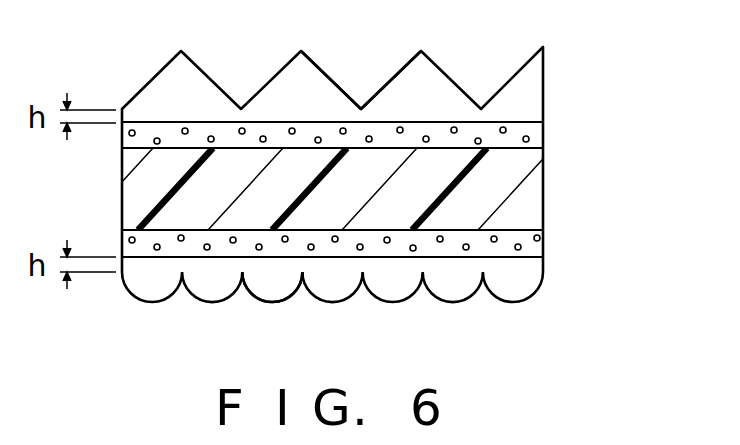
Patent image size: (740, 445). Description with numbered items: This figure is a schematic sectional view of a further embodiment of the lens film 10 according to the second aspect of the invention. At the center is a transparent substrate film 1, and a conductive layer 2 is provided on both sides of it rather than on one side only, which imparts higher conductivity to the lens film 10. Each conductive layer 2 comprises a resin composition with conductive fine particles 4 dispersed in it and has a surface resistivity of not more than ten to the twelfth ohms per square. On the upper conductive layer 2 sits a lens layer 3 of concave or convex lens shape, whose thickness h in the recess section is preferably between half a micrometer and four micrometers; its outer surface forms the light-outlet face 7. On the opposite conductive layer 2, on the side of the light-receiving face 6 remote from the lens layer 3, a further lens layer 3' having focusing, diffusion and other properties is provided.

The transparent substrate film 1 is at (532, 197).
The conductive layer 2 is at (543, 128).
The lens layer 3 is at (382, 155).
The lens layer 3' is at (385, 292).
The conductive fine particles 4 is at (532, 138).
The light-receiving face 6 is at (293, 292).
The light-outlet face 7 is at (340, 88).
The lens film 10 is at (645, 33).